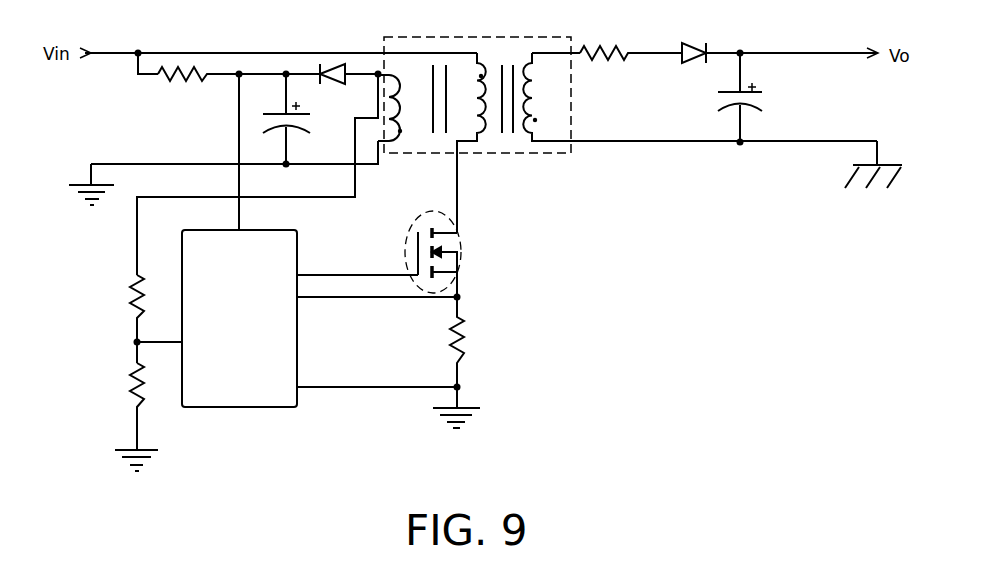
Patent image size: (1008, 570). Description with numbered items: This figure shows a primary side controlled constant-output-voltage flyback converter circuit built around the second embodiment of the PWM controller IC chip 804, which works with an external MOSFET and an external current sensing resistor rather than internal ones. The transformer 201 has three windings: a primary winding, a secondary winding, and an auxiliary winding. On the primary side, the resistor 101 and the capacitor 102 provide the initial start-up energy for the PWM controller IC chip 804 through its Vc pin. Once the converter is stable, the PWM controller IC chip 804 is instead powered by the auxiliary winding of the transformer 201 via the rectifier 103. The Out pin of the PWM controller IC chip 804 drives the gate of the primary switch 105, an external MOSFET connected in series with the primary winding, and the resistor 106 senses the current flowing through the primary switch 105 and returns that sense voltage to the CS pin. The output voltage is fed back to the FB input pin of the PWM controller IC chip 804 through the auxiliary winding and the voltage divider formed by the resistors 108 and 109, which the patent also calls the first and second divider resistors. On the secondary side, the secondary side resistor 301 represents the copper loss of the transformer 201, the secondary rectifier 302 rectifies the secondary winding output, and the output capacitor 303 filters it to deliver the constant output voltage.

The resistor 101 is at (187, 82).
The capacitor 102 is at (298, 130).
The rectifier 103 is at (336, 84).
The transformer 201 is at (467, 36).
The secondary side resistor 301 is at (611, 47).
The secondary rectifier 302 is at (696, 45).
The output capacitor 303 is at (756, 107).
The PWM controller IC chip 804 is at (255, 331).
The primary switch 105 is at (462, 258).
The resistor 106 is at (452, 340).
The resistor 108 is at (128, 306).
The resistor 109 is at (128, 398).